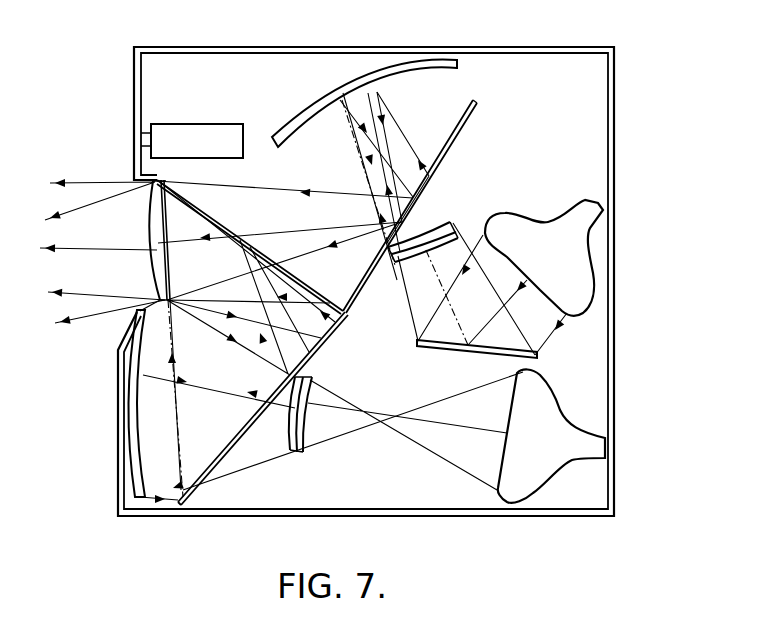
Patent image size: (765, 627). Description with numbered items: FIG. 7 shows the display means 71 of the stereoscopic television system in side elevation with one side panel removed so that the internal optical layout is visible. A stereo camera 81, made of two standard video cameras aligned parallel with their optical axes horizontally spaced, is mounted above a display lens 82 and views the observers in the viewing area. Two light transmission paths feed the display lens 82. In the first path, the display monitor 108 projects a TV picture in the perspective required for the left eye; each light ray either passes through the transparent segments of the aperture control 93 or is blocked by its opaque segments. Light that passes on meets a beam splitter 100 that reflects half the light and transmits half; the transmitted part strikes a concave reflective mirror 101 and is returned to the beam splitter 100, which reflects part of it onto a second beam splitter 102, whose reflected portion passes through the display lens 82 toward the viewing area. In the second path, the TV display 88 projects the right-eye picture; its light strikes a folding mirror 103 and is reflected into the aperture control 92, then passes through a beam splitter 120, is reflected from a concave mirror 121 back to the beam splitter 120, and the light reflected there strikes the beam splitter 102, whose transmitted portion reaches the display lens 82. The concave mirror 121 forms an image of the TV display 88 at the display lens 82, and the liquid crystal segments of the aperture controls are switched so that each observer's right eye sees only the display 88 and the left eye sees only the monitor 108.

The display means 71 is at (536, 44).
The stereo camera 81 is at (181, 136).
The display lens 82 is at (150, 222).
The TV display 88 is at (576, 262).
The aperture control 92 is at (449, 228).
The aperture control 93 is at (306, 426).
The beam splitter 100 is at (236, 437).
The concave reflective mirror 101 is at (146, 421).
The second beam splitter 102 is at (211, 216).
The folding mirror 103 is at (434, 350).
The display monitor 108 is at (535, 468).
The beam splitter 120 is at (456, 133).
The concave mirror 121 is at (420, 58).